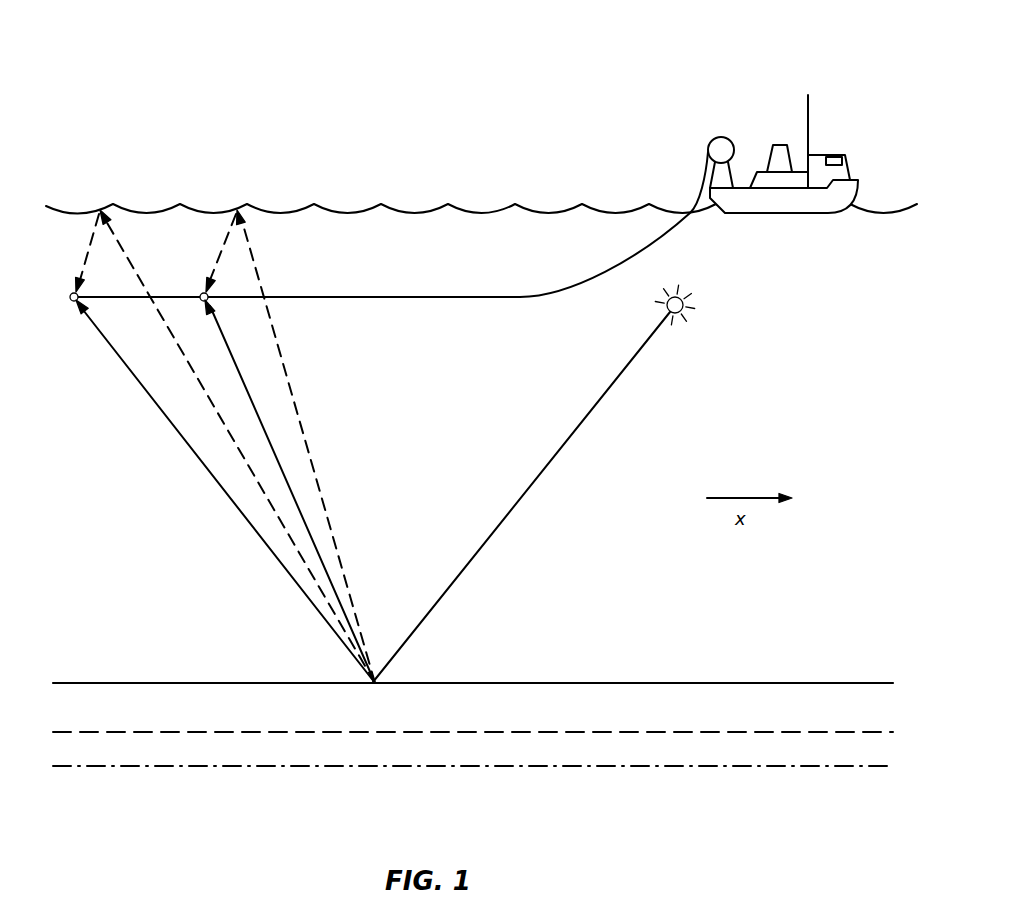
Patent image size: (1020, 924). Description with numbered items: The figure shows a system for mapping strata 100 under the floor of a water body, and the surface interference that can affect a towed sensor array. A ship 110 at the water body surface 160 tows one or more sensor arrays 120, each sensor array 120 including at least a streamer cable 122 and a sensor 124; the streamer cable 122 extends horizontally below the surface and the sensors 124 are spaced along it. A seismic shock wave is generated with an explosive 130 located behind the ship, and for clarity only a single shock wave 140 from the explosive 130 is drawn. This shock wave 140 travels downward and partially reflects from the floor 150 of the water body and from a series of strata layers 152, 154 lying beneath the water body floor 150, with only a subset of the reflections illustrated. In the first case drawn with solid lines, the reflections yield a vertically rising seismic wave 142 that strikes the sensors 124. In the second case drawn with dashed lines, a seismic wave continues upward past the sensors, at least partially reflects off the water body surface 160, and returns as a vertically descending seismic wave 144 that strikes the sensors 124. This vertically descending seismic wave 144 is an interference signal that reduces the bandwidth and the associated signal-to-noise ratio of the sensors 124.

The system for mapping strata 100 is at (188, 62).
The ship 110 is at (809, 125).
The sensor array 120 is at (360, 272).
The streamer cable 122 is at (422, 297).
The sensor 124 is at (71, 291).
The explosive 130 is at (707, 308).
The shock wave 140 is at (522, 497).
The vertically rising seismic wave 142 is at (157, 407).
The vertically descending seismic wave 144 is at (86, 238).
The floor of the water body 150 is at (440, 682).
The strata layer 152 is at (440, 731).
The strata layer 154 is at (440, 765).
The water body surface 160 is at (255, 210).